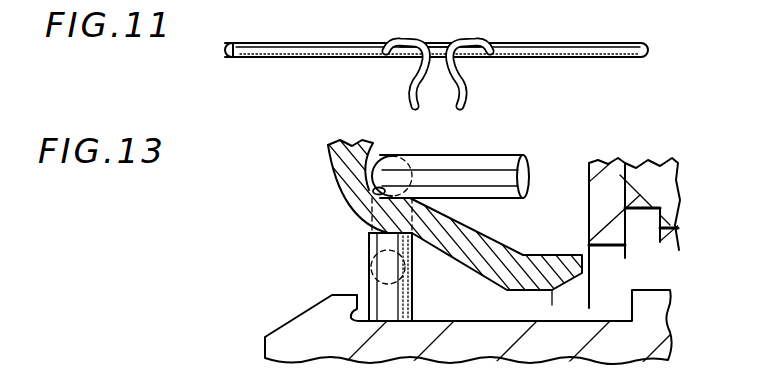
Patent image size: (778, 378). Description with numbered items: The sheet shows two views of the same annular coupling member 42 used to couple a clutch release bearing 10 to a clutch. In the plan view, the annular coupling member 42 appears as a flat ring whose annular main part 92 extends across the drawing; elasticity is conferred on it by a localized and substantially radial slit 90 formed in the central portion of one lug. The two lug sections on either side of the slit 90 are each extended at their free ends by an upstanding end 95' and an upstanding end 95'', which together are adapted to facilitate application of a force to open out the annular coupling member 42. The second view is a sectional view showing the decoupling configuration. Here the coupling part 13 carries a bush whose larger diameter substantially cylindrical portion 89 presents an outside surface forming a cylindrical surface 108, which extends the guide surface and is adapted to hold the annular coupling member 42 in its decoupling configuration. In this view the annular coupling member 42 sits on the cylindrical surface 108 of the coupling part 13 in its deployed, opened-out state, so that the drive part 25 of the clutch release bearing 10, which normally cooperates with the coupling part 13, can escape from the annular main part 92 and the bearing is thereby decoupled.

In FIG. 11, the annular coupling member 42 is at (612, 43).
In FIG. 13, the annular coupling member 42 is at (368, 256).
In FIG. 11, the annular main part 92 is at (252, 48).
In FIG. 13, the annular main part 92 is at (413, 284).
In FIG. 11, the slit 90 is at (447, 44).
In FIG. 11, the upstanding end 95' is at (395, 74).
In FIG. 13, the upstanding end 95' is at (466, 182).
In FIG. 11, the upstanding end 95'' is at (487, 74).
In FIG. 13, the coupling part 13 is at (328, 165).
In FIG. 13, the cylindrical surface 108 is at (376, 193).
In FIG. 13, the larger diameter substantially cylindrical portion 89 is at (392, 218).
In FIG. 13, the clutch release bearing 10 is at (658, 162).
In FIG. 13, the drive part 25 is at (598, 320).